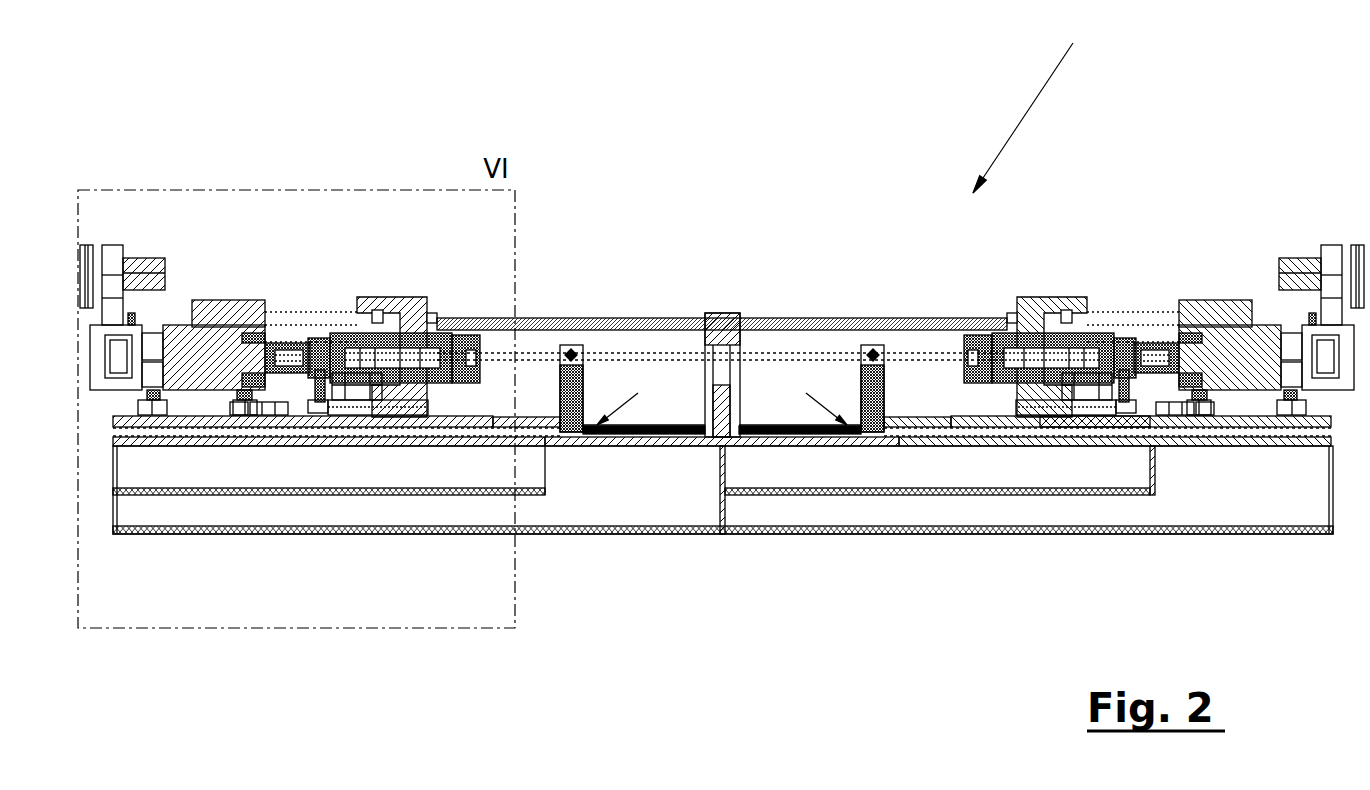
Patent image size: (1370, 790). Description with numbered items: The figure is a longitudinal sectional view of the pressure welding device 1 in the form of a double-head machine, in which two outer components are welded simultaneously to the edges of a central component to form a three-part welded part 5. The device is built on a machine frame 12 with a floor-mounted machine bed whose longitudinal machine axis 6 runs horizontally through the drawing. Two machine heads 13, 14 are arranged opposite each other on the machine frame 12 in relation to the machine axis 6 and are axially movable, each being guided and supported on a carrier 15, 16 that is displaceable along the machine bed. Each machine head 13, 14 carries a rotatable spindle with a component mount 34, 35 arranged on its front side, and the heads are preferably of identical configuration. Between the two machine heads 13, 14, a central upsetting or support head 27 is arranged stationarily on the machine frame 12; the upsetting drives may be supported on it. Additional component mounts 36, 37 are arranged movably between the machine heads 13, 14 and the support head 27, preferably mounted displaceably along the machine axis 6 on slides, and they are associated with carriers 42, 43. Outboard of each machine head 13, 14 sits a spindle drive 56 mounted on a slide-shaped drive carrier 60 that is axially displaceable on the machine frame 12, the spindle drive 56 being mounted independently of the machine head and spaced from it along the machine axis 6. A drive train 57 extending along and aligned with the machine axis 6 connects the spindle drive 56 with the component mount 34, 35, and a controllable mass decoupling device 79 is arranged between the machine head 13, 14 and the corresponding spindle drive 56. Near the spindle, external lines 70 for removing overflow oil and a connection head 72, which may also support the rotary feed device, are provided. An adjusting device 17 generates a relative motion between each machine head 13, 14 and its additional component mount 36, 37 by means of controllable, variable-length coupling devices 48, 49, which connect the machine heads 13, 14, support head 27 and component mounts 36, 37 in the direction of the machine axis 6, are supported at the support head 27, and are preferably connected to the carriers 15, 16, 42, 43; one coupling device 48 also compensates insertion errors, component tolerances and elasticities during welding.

The pressure welding device 1 is at (1032, 101).
The welded part 5 is at (773, 350).
The machine axis 6 is at (830, 355).
The machine frame 12 is at (593, 495).
The machine head 13 is at (410, 298).
The machine head 14 is at (1053, 310).
The carrier 15 is at (398, 446).
The carrier 16 is at (1068, 446).
The adjusting device 17 is at (722, 401).
The upsetting or support head 27 is at (718, 333).
The component mount 34 is at (463, 333).
The component mount 35 is at (983, 342).
The additional component mount 36 is at (563, 345).
The additional component mount 37 is at (870, 345).
The carrier 42 is at (518, 417).
The carrier 43 is at (908, 428).
The coupling device 48 is at (665, 446).
The coupling device 49 is at (475, 446).
The spindle drive 56 is at (227, 347).
The drive train 57 is at (313, 348).
The drive carrier 60 is at (198, 446).
The external lines 70 is at (363, 446).
The connection head 72 is at (320, 446).
The mass decoupling device 79 is at (292, 446).